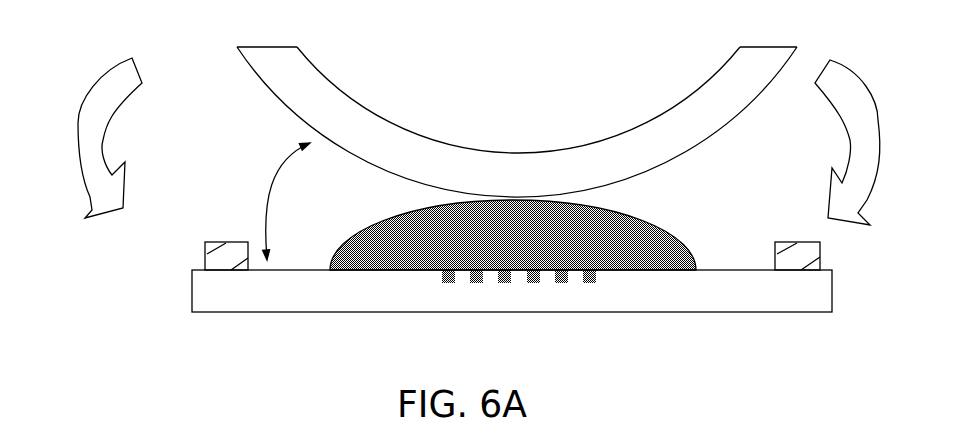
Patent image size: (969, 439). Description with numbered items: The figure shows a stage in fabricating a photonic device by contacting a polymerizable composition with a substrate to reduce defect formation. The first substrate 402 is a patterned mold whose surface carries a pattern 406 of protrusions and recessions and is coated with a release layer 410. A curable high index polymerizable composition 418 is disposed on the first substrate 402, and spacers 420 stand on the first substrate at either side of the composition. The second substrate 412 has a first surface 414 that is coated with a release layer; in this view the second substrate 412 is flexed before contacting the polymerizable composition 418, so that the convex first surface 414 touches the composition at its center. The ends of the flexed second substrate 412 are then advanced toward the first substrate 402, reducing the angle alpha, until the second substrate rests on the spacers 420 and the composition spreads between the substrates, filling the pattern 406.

The first substrate 402 is at (203, 305).
The pattern 406 is at (470, 283).
The release layer 410 is at (291, 283).
The second substrate 412 is at (478, 128).
The first surface 414 is at (349, 133).
The polymerizable composition 418 is at (513, 235).
The spacers 420 is at (205, 250).